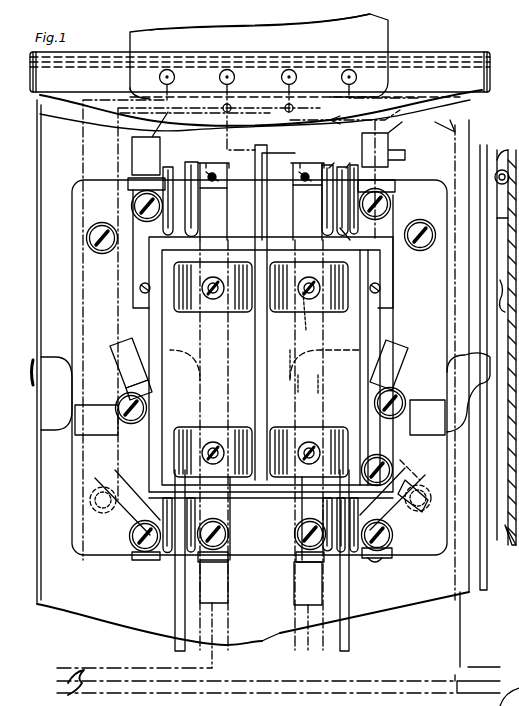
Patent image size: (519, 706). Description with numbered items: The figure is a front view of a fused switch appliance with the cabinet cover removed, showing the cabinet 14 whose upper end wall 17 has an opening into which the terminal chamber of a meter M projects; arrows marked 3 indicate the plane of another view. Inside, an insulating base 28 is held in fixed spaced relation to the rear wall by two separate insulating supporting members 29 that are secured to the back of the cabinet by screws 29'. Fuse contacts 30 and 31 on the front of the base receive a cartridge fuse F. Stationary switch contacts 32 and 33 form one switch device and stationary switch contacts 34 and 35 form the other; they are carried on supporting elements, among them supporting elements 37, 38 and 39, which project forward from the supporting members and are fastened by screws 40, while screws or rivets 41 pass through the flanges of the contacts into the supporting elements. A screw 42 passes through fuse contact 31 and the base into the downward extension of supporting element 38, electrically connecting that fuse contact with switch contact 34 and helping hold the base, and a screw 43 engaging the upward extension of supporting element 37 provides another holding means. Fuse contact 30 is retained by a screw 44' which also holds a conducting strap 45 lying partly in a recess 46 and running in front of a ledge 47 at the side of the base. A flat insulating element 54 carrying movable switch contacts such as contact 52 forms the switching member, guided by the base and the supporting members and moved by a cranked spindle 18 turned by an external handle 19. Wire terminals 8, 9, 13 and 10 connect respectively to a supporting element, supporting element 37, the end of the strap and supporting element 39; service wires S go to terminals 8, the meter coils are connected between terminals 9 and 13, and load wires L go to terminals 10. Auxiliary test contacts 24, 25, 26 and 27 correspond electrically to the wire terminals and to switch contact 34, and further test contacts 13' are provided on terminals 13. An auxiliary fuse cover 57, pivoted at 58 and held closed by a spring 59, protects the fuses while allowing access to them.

The shaft 3 is at (298, 660).
The wire connecting terminal 8 is at (224, 588).
The wire connecting terminal 9 is at (112, 484).
The wire connecting terminal 10 is at (160, 146).
The wire connecting terminal 13 is at (257, 360).
The test contact 13' is at (260, 391).
The cabinet 14 is at (484, 148).
The upper end wall 17 is at (440, 55).
The spindle 18 is at (448, 428).
The operating handle 19 is at (503, 306).
The auxiliary test contact 24 is at (228, 550).
The auxiliary test contact 25 is at (125, 538).
The auxiliary test contact 26 is at (128, 192).
The auxiliary test contact 27 is at (212, 170).
The insulating base 28 is at (148, 326).
The insulating supporting member 29 is at (272, 380).
The screw 29' is at (251, 389).
The fuse contact 30 is at (265, 397).
The fuse contact 31 is at (275, 300).
The stationary switch contact 32 is at (326, 590).
The stationary switch contact 33 is at (366, 586).
The stationary switch contact 34 is at (330, 158).
The stationary switch contact 35 is at (353, 158).
The supporting element 37 is at (413, 484).
The supporting element 38 is at (296, 198).
The supporting element 39 is at (385, 226).
The screw 40 is at (140, 292).
The screw or rivet 41 is at (378, 560).
The screw 42 is at (309, 296).
The screw 43 is at (377, 456).
The screw 44' is at (261, 460).
The conducting member 45 is at (320, 378).
The recess 46 is at (298, 377).
The ledge 47 is at (398, 454).
The movable switch contact 52 is at (355, 560).
The insulating element 54 is at (350, 644).
The auxiliary cover 57 is at (504, 506).
The pivot 58 is at (502, 185).
The spring 59 is at (499, 228).
The fuse F is at (295, 362).
The load wire L is at (468, 668).
The meter M is at (388, 32).
The service wire S is at (76, 682).